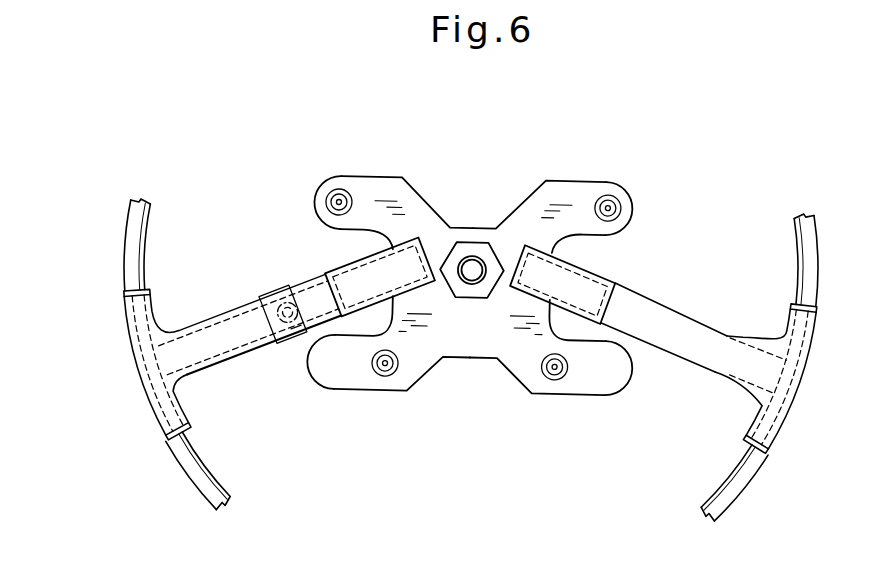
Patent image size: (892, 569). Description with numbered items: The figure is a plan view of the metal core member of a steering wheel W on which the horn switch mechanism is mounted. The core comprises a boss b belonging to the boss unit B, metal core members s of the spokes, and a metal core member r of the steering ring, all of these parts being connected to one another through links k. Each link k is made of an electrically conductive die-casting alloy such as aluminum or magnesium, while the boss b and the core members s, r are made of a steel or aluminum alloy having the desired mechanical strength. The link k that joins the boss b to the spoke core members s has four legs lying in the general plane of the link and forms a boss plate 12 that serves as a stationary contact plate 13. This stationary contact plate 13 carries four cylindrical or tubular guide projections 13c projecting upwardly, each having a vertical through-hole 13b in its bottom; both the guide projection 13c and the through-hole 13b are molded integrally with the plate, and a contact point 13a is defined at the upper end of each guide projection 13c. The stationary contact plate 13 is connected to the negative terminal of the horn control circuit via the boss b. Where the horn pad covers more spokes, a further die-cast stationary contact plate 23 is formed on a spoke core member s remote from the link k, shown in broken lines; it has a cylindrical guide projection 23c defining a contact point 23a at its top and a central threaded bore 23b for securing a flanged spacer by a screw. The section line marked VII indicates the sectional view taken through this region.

The steering wheel W is at (188, 168).
The metal core member of steering ring r is at (190, 455).
The link k is at (172, 387).
The metal core member of spoke s is at (228, 330).
The boss unit B is at (469, 243).
The boss plate 12 is at (473, 173).
The stationary contact plate 13 is at (393, 190).
The contact point 13a is at (336, 196).
The through-hole 13b is at (327, 200).
The guide projection 13c is at (357, 203).
The boss b is at (488, 258).
The stationary contact plate 23 is at (282, 300).
The contact point 23a is at (270, 342).
The threaded bore 23b is at (292, 305).
The cylindrical guide projection 23c is at (297, 332).
The section line VII is at (473, 243).